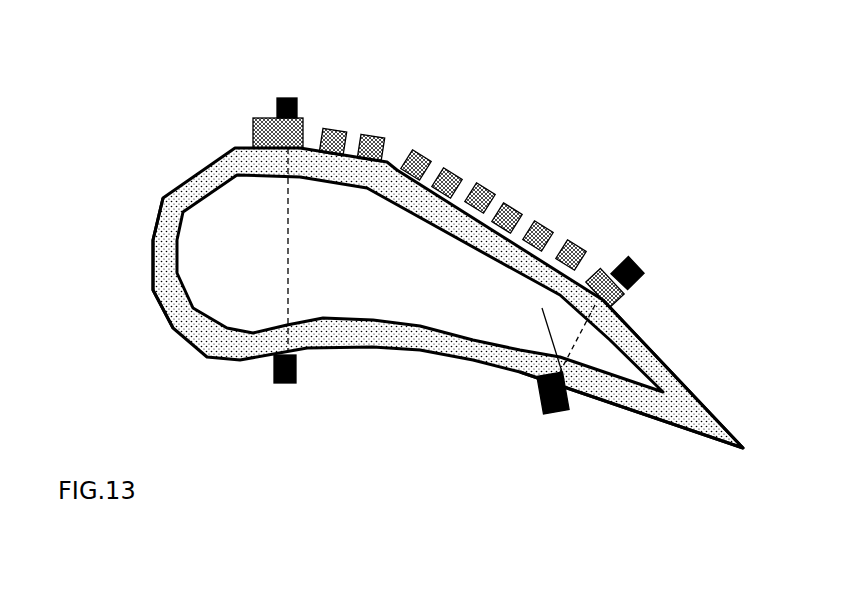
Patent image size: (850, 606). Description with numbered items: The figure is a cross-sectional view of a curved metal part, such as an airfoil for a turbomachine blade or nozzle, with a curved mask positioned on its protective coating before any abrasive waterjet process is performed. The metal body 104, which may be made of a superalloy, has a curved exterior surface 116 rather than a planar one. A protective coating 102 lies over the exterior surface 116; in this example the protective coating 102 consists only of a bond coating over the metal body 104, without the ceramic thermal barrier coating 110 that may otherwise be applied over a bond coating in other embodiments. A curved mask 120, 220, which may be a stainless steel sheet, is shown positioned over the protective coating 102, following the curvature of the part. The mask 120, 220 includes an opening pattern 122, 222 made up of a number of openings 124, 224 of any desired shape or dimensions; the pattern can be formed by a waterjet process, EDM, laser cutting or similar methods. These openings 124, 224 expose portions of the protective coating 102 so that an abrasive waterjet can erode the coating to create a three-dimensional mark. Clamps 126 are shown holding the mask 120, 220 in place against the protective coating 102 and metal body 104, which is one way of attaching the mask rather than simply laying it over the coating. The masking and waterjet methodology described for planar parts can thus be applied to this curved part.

The protective coating 102 is at (355, 320).
The metal body 104 is at (567, 387).
The ceramic thermal barrier coating 110 is at (223, 337).
The exterior surface 116 is at (625, 343).
The mask 120 is at (691, 256).
The mask 220 is at (627, 306).
The opening pattern 122 is at (481, 150).
The opening pattern 222 is at (630, 258).
The opening 124 is at (611, 220).
The opening 224 is at (553, 245).
The clamp 126 is at (277, 97).